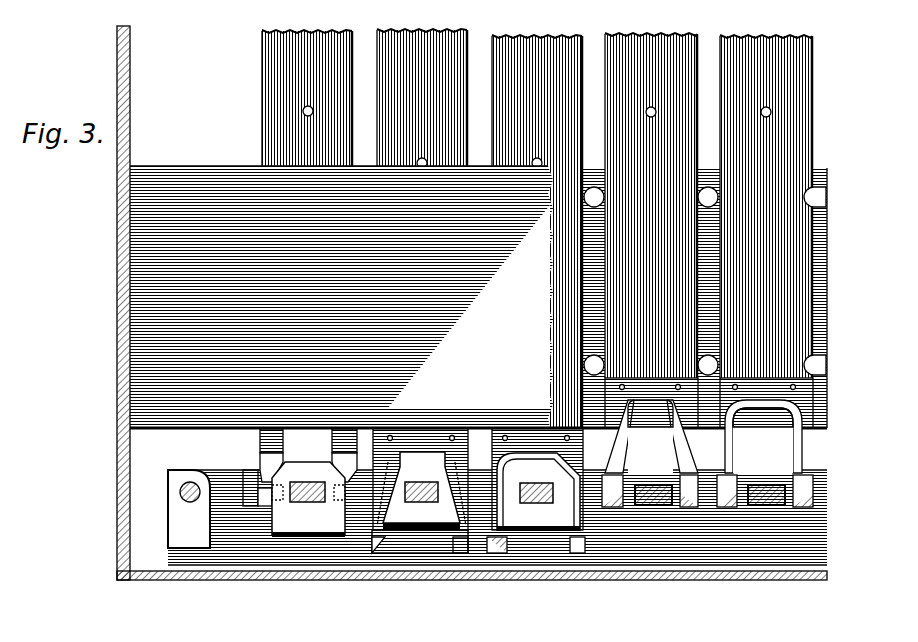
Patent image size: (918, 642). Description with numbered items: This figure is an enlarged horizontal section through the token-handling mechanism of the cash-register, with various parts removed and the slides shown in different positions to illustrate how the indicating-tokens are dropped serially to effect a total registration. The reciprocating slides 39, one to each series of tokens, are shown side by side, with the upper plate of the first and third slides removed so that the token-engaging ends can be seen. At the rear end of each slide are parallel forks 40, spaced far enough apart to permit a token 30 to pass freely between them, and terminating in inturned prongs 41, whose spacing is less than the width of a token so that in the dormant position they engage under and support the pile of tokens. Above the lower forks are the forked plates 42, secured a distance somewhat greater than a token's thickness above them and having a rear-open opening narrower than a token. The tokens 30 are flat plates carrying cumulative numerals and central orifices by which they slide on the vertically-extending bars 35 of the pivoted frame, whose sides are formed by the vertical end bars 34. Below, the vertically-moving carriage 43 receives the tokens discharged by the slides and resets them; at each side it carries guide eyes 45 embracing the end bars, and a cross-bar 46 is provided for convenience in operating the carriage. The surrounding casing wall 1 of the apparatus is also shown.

The machine frame 1 is at (459, 303).
The reciprocating slides 39 is at (544, 219).
The forked plates 42 is at (268, 445).
The inturned prongs 41 is at (257, 472).
The vertically-extending bars 35 is at (307, 482).
The parallel forks 40 is at (792, 448).
The register-tokens 30 is at (312, 538).
The cross-bar 46 is at (410, 540).
The vertically-moving carriage 43 is at (256, 535).
The guide eyes 45 is at (178, 522).
The vertical end bars 34 is at (195, 483).